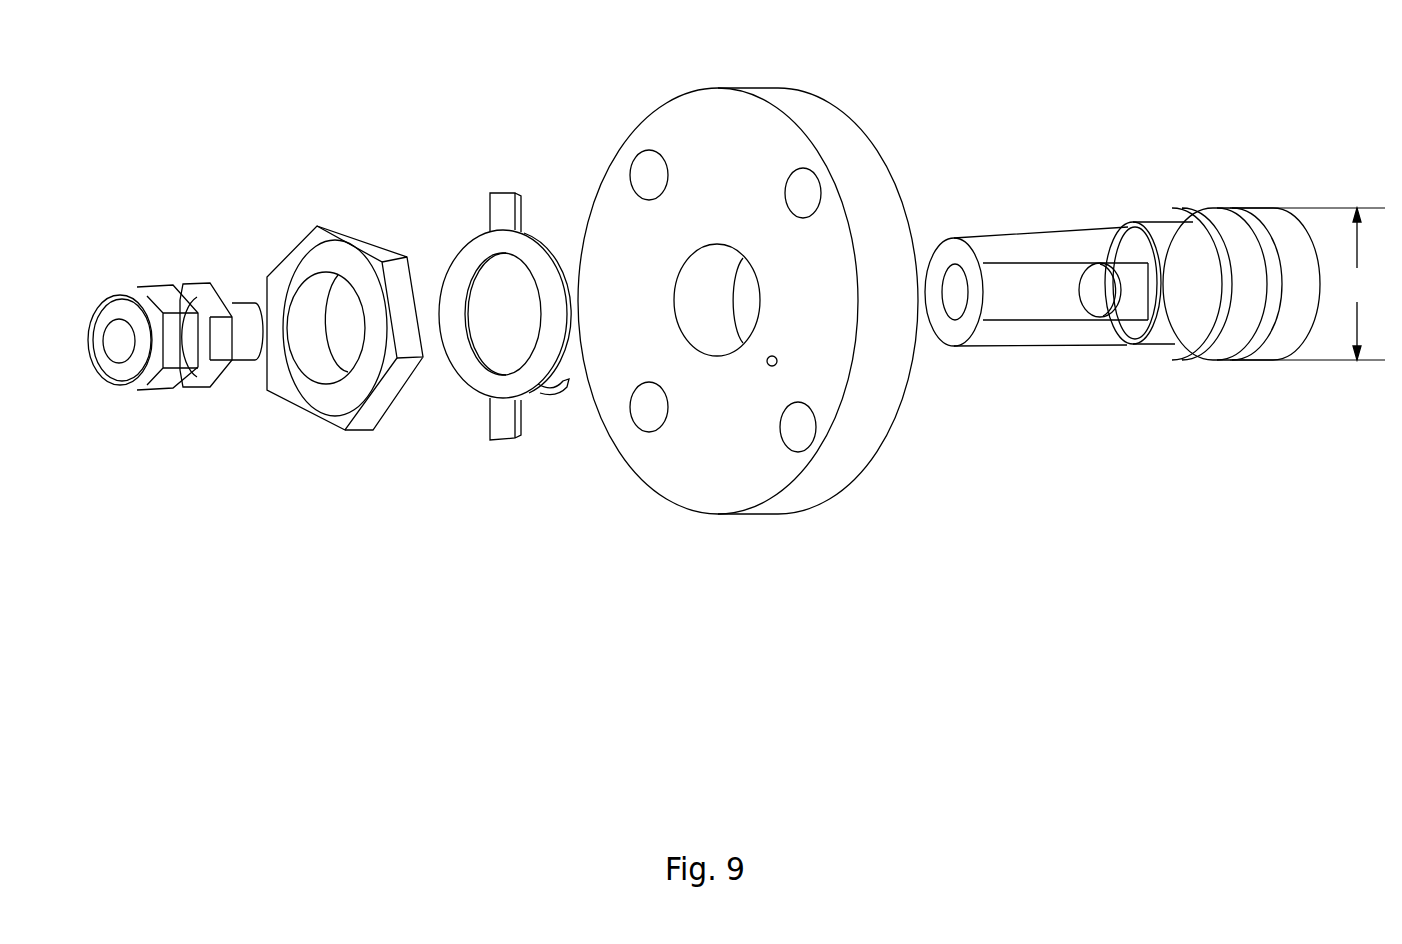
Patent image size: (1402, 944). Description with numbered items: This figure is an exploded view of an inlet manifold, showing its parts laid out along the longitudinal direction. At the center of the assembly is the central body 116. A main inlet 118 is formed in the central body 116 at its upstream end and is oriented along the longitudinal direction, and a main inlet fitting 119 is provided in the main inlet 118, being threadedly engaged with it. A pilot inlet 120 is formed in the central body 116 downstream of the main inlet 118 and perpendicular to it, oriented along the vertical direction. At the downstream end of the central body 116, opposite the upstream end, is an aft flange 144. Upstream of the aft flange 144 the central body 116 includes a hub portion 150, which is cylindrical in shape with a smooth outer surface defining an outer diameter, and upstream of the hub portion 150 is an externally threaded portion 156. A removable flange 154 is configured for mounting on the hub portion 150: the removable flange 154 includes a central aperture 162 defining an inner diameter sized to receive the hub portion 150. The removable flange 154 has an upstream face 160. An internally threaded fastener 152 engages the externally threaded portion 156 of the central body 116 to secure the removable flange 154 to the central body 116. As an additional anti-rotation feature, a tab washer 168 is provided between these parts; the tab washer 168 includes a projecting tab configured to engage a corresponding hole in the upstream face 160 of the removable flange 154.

The central body 116 is at (1043, 168).
The main inlet 118 is at (952, 300).
The main inlet fitting 119 is at (160, 390).
The pilot inlet 120 is at (1100, 293).
The aft flange 144 is at (1280, 233).
The hub portion 150 is at (1223, 228).
The internally threaded fastener 152 is at (367, 242).
The removable flange 154 is at (748, 274).
The externally threaded portion 156 is at (1155, 227).
The upstream face 160 is at (736, 158).
The central aperture 162 is at (701, 310).
The tab washer 168 is at (508, 203).